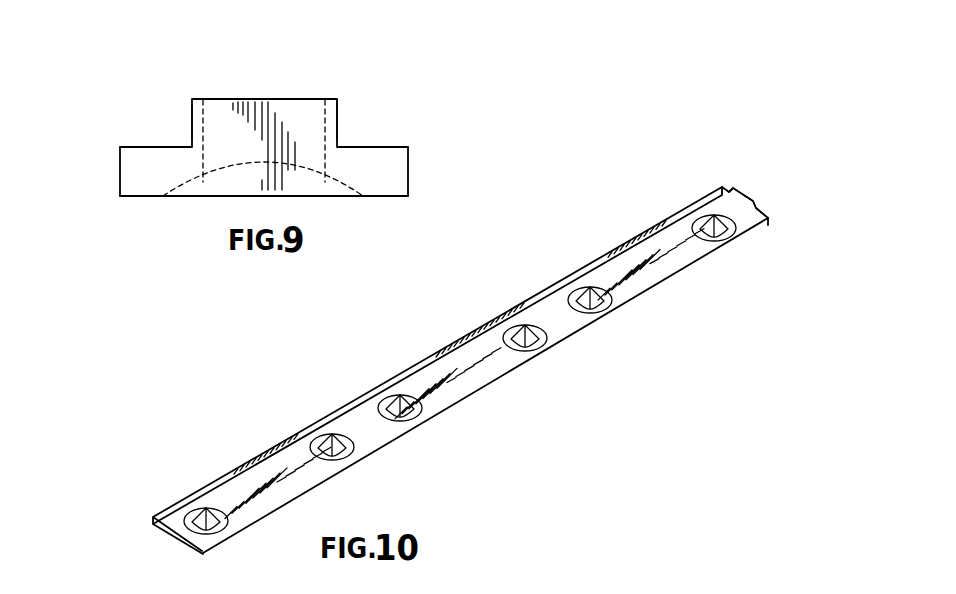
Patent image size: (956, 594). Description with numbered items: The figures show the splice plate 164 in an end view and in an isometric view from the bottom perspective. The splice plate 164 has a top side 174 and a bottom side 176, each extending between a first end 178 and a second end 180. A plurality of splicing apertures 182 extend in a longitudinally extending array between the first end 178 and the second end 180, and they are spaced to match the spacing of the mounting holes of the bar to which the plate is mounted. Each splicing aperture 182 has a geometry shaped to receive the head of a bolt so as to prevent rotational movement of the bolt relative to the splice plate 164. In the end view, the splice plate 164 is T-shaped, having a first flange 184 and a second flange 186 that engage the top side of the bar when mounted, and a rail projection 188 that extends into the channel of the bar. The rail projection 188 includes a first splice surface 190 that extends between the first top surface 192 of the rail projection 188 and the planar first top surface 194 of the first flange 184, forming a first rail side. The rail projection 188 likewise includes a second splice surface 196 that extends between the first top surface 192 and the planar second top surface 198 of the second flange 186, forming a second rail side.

In FIG. 9, the splice plate 164 is at (444, 74).
In FIG. 10, the splice plate 164 is at (705, 153).
In FIG. 10, the top side 174 is at (740, 190).
In FIG. 10, the bottom side 176 is at (666, 252).
In FIG. 9, the first end 178 is at (143, 172).
In FIG. 10, the second end 180 is at (752, 202).
In FIG. 10, the splicing apertures 182 is at (534, 350).
In FIG. 9, the first flange 184 is at (137, 147).
In FIG. 9, the second flange 186 is at (398, 146).
In FIG. 9, the rail projection 188 is at (247, 98).
In FIG. 9, the first splice surface 190 is at (192, 120).
In FIG. 9, the first top surface of the rail projection 192 is at (218, 98).
In FIG. 9, the planar first top surface of the first flange 194 is at (150, 146).
In FIG. 9, the second splice surface 196 is at (338, 107).
In FIG. 9, the planar second top surface of the second flange 198 is at (368, 146).